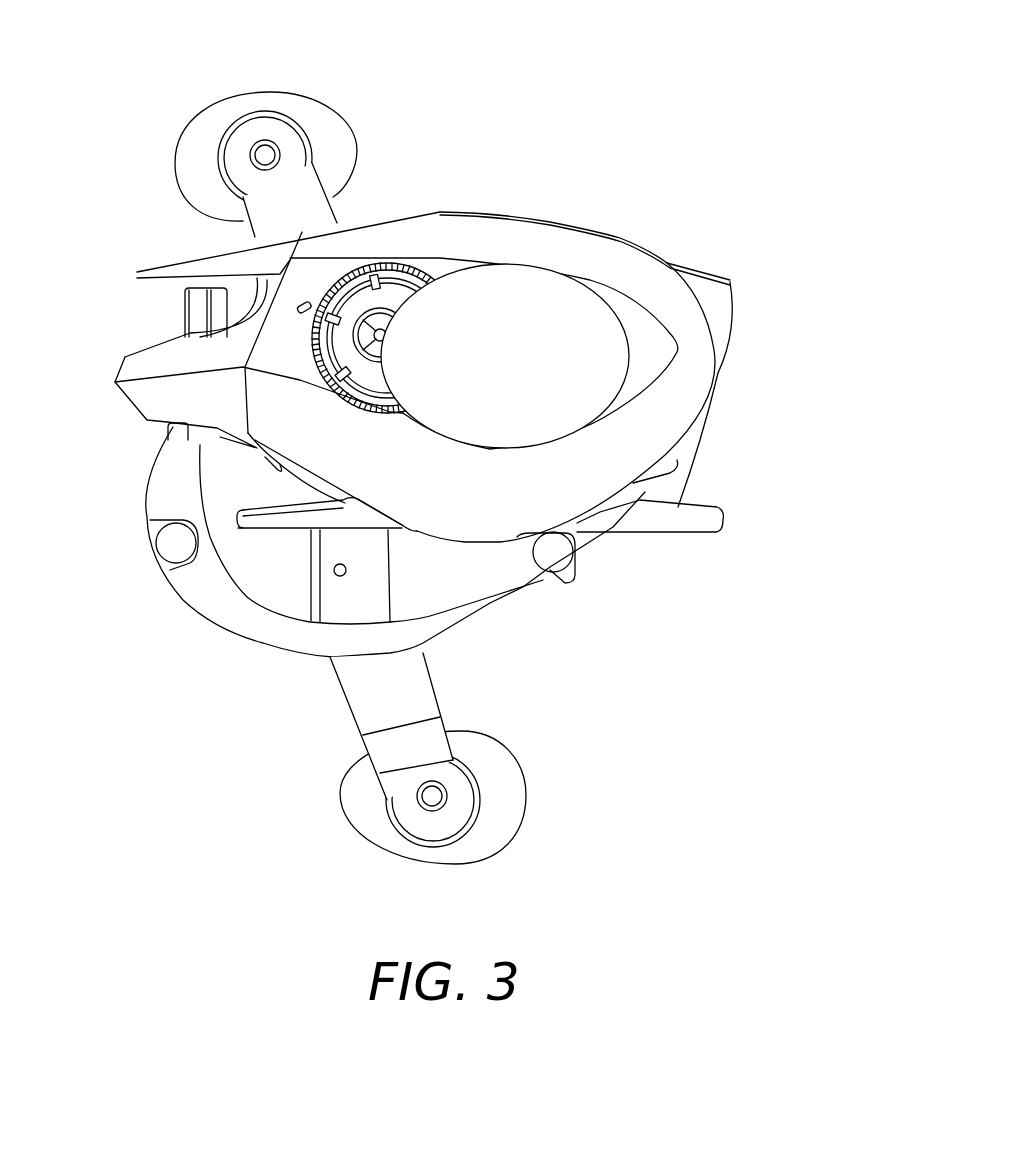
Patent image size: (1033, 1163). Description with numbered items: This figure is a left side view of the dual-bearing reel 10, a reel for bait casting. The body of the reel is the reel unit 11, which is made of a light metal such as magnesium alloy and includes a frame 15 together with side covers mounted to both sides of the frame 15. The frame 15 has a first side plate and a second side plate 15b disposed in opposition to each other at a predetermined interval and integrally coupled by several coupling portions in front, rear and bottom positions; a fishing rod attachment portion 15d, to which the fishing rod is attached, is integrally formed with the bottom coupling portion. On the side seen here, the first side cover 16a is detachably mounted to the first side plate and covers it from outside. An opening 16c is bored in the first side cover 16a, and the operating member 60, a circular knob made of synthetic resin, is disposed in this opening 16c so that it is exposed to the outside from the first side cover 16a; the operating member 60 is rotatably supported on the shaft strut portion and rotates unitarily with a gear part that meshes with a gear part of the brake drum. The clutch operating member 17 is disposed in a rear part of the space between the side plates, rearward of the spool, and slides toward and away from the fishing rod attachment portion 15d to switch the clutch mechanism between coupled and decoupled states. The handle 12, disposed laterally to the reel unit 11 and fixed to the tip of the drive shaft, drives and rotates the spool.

The dual-bearing reel 10 is at (577, 153).
The reel unit 11 is at (503, 197).
The handle 12 is at (337, 730).
The frame 15 is at (193, 262).
The second side plate 15b is at (275, 560).
The fishing rod attachment portion 15d is at (680, 523).
The first side cover 16a is at (587, 242).
The opening 16c is at (378, 265).
The clutch operating member 17 is at (703, 262).
The operating member 60 is at (360, 305).